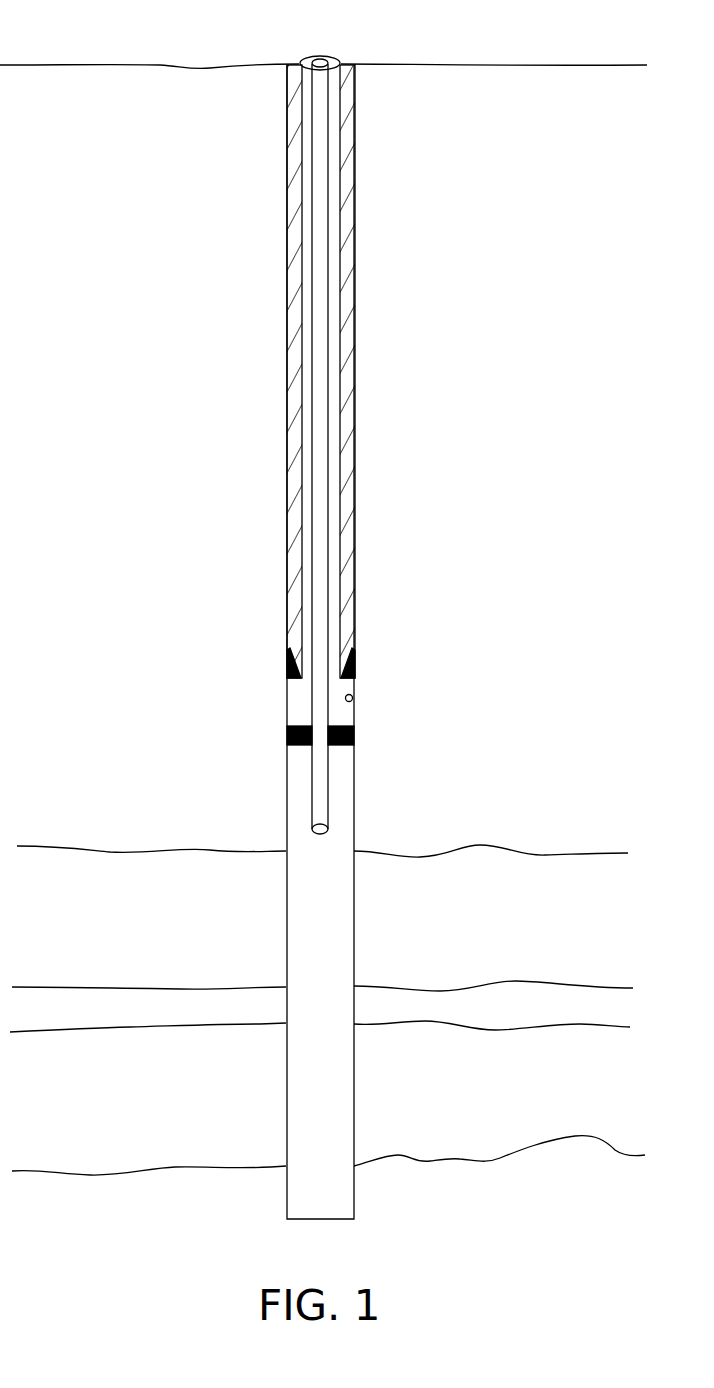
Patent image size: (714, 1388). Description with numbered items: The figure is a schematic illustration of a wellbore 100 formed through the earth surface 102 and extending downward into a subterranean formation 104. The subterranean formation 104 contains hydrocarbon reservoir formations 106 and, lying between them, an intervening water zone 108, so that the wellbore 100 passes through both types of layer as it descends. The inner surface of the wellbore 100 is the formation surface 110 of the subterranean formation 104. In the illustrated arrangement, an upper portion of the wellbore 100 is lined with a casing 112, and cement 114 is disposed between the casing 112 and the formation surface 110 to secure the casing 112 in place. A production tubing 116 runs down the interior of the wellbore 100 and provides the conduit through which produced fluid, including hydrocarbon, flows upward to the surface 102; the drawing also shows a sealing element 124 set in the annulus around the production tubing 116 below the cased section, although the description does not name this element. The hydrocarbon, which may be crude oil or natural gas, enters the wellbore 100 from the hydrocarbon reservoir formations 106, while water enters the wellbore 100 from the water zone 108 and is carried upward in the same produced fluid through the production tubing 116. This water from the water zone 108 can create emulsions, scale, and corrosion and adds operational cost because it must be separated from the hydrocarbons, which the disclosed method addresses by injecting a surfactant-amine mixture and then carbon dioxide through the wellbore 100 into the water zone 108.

The wellbore 100 is at (168, 222).
The earth surface 102 is at (247, 63).
The subterranean formation 104 is at (466, 441).
The hydrocarbon reservoir formations 106 is at (187, 883).
The water zone 108 is at (135, 1005).
The formation surface 110 is at (352, 701).
The casing 112 is at (287, 101).
The cement 114 is at (347, 312).
The production tubing 116 is at (311, 556).
The packer 124 is at (298, 746).